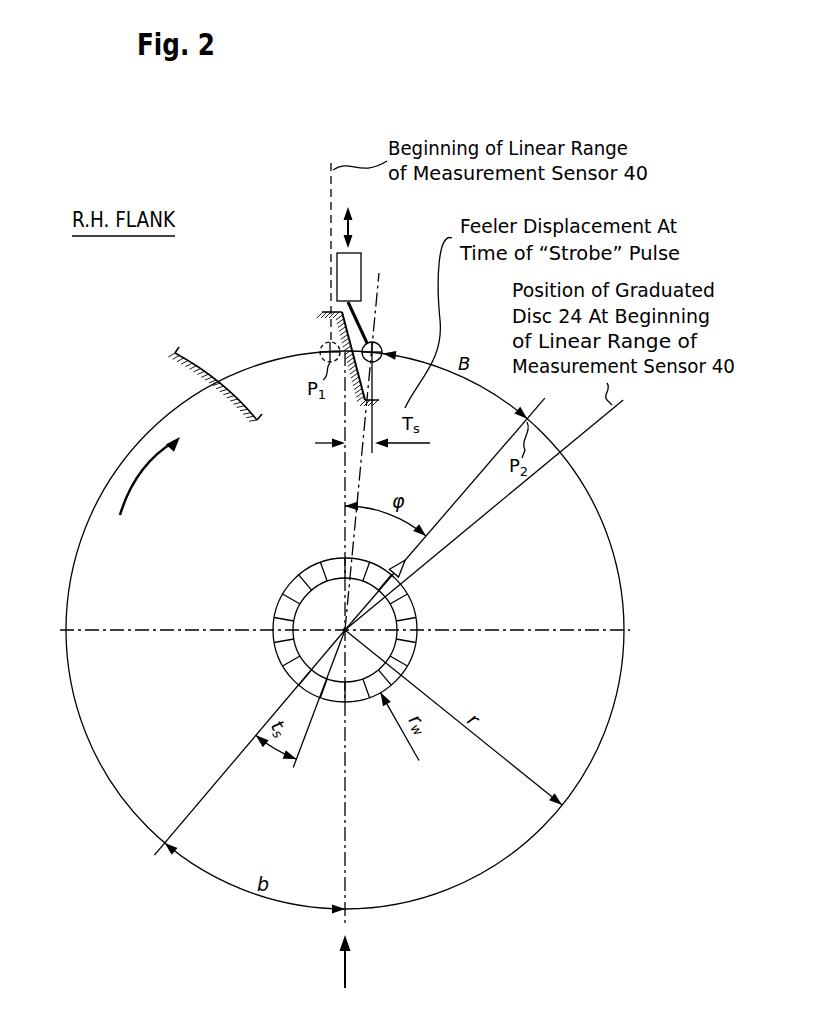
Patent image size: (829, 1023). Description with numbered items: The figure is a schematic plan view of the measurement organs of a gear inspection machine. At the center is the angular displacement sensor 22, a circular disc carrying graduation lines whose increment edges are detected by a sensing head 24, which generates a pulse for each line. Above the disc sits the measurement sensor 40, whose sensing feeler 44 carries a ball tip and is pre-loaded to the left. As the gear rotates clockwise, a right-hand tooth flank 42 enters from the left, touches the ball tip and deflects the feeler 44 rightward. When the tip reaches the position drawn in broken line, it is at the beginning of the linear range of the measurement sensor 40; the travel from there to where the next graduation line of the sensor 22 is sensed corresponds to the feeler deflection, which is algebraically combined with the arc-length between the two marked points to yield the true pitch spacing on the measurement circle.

The angular displacement sensor 22 is at (432, 659).
The sensing head 24 is at (413, 568).
The measurement sensor 40 is at (347, 273).
The tooth flank 42 is at (205, 362).
The sensing feeler 44 is at (362, 322).